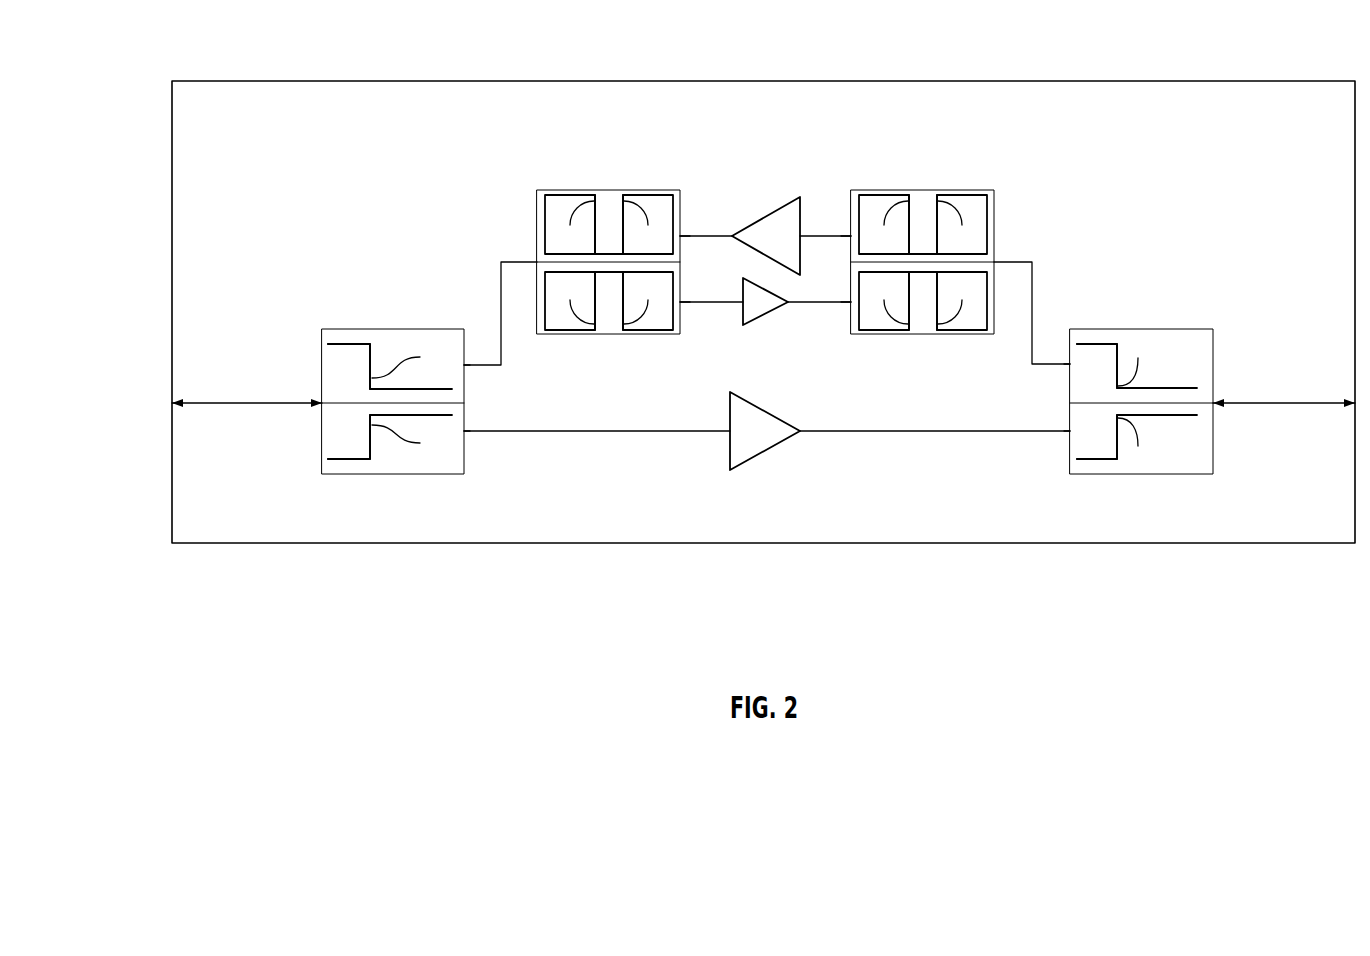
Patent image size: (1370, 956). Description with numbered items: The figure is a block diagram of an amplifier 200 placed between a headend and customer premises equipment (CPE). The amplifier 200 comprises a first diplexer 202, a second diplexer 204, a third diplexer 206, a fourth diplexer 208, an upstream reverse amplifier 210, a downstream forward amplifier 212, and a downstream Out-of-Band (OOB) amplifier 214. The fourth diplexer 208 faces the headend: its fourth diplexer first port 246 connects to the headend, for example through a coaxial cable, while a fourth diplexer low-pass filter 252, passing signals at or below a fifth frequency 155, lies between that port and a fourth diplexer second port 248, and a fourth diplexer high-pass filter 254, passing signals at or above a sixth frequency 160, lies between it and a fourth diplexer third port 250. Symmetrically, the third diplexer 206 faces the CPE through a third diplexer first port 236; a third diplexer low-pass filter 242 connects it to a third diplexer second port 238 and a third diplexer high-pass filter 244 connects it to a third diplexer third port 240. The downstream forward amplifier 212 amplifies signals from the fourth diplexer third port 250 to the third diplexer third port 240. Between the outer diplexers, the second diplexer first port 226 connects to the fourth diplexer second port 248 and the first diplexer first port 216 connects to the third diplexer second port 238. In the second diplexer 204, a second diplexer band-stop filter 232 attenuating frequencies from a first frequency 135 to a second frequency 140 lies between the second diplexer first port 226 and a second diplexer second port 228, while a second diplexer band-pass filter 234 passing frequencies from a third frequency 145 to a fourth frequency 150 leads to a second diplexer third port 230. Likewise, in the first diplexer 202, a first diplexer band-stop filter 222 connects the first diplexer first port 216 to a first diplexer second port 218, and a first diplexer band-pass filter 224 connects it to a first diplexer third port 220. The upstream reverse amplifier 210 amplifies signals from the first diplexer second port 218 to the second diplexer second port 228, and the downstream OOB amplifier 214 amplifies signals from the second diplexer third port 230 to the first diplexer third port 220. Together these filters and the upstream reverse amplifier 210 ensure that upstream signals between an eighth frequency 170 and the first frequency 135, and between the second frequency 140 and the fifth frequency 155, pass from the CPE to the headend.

The amplifier 200 is at (1300, 80).
The first diplexer 202 is at (972, 190).
The second diplexer 204 is at (537, 195).
The third diplexer 206 is at (1213, 370).
The fourth diplexer 208 is at (320, 357).
The upstream reverse amplifier 210 is at (794, 250).
The downstream forward amplifier 212 is at (771, 443).
The downstream Out-of-Band (OOB) amplifier 214 is at (773, 308).
The first diplexer first port 216 is at (997, 262).
The first diplexer second port 218 is at (848, 240).
The first diplexer third port 220 is at (850, 305).
The first diplexer band-stop filter 222 is at (920, 213).
The first diplexer band-pass filter 224 is at (922, 318).
The second diplexer first port 226 is at (537, 260).
The second diplexer second port 228 is at (680, 238).
The second diplexer third port 230 is at (680, 313).
The second diplexer band-stop filter 232 is at (607, 213).
The second diplexer band-pass filter 234 is at (607, 318).
The third diplexer first port 236 is at (1215, 407).
The third diplexer second port 238 is at (1067, 367).
The third diplexer third port 240 is at (1067, 433).
The third diplexer low-pass filter 242 is at (1192, 353).
The third diplexer high-pass filter 244 is at (1192, 453).
The fourth diplexer first port 246 is at (320, 407).
The fourth diplexer second port 248 is at (465, 365).
The fourth diplexer third port 250 is at (465, 447).
The fourth diplexer low-pass filter 252 is at (446, 337).
The fourth diplexer high-pass filter 254 is at (443, 457).
The first frequency 135 is at (730, 228).
The second frequency 140 is at (802, 228).
The third frequency 145 is at (852, 190).
The fourth frequency 150 is at (802, 297).
The fifth frequency 155 is at (680, 222).
The sixth frequency 160 is at (764, 445).
The eighth frequency 170 is at (540, 228).